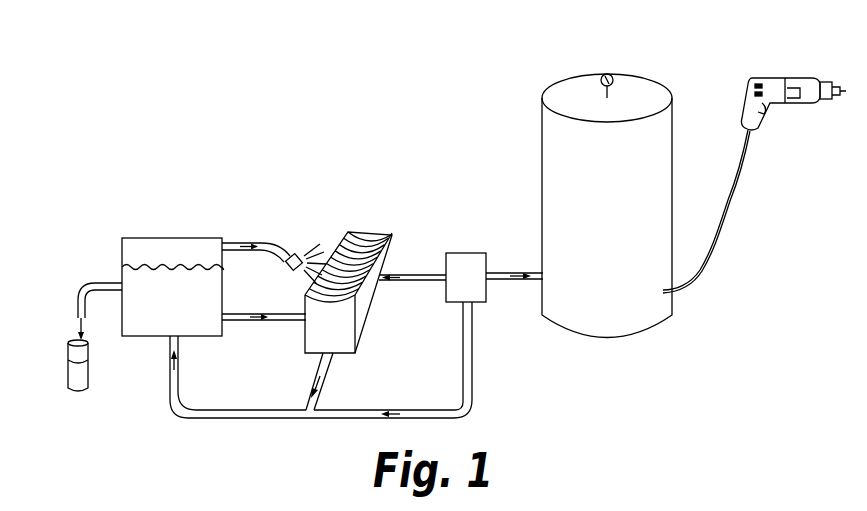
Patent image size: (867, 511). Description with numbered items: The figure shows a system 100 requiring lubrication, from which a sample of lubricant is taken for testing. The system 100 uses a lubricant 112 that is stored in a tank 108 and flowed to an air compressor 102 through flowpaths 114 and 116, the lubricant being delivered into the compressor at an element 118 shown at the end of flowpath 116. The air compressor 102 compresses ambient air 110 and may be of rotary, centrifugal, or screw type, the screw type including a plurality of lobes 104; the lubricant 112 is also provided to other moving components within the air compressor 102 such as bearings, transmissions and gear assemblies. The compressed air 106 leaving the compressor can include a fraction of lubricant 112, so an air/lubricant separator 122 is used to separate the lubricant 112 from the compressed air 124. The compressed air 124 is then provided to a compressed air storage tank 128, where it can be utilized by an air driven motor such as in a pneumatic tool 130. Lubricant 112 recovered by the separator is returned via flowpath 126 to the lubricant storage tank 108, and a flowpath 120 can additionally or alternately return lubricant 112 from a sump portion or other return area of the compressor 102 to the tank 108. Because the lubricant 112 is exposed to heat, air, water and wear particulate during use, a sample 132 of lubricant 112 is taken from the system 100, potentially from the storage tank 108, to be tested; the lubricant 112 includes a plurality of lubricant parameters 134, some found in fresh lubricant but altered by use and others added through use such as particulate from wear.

The system 100 is at (261, 86).
The air compressor 102 is at (348, 341).
The lobes 104 is at (375, 220).
The compressed air 106 is at (384, 282).
The tank 108 is at (122, 248).
The ambient air 110 is at (347, 220).
The lubricant 112 is at (188, 314).
The flowpath 114 is at (258, 322).
The flowpath 116 is at (245, 243).
The spray nozzle 118 is at (307, 242).
The flowpath 120 is at (318, 380).
The air/lubricant separator 122 is at (460, 252).
The compressed air 124 is at (520, 272).
The flowpath 126 is at (418, 412).
The compressed air storage tank 128 is at (643, 298).
The pneumatic tool 130 is at (770, 80).
The sample 132 is at (72, 372).
The lubricant parameters 134 is at (88, 372).